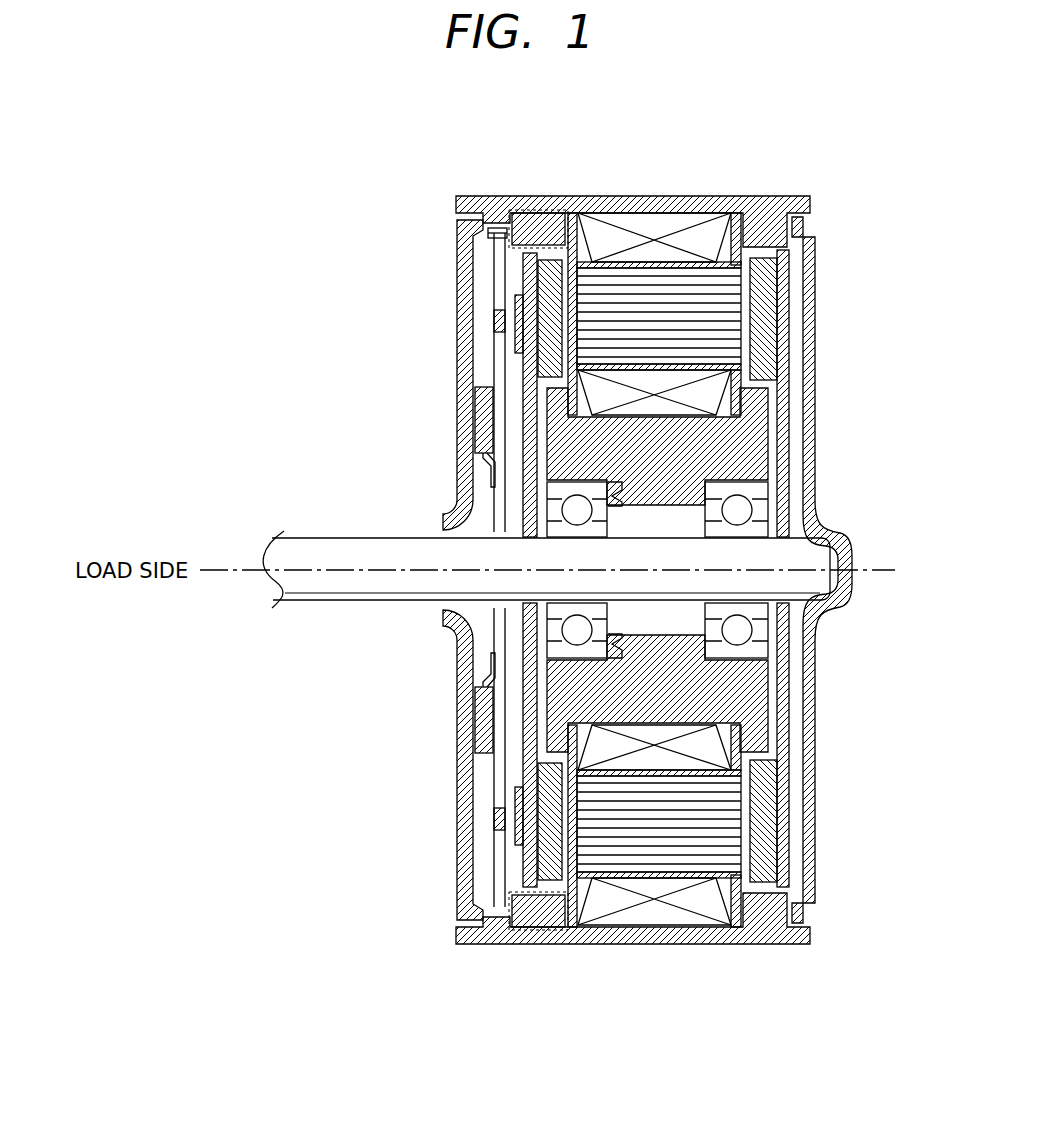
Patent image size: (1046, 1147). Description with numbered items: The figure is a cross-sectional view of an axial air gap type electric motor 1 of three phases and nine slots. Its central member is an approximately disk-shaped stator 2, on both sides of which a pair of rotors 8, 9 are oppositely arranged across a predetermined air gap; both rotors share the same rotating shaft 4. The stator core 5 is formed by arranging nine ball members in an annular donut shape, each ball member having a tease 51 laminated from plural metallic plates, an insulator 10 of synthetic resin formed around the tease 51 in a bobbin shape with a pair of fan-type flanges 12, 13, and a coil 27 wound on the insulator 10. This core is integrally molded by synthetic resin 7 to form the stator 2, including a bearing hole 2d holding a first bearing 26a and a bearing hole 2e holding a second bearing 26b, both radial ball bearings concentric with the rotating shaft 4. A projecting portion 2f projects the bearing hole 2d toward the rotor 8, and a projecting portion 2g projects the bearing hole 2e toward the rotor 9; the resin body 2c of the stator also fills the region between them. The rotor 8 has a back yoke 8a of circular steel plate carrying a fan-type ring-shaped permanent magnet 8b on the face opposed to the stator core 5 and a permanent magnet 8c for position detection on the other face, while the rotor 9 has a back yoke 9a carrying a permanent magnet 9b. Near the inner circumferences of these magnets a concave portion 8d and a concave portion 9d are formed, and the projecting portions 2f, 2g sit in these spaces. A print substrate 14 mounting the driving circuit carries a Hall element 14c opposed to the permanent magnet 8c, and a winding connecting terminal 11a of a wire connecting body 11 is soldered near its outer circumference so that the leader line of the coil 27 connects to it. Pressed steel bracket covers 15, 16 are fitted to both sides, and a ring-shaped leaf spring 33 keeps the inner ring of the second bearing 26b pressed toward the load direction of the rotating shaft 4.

The axial air gap type electric motor 1 is at (345, 202).
The stator 2 is at (740, 184).
The bearing support portion 2c is at (620, 468).
The bearing hole 2d is at (590, 680).
The bearing hole 2e is at (750, 668).
The projecting portion 2f is at (545, 735).
The projecting portion 2g is at (778, 460).
The rotating shaft 4 is at (285, 538).
The stator core 5 is at (611, 188).
The synthetic resin 7 is at (668, 196).
The rotor 8 is at (503, 655).
The back yoke 8a is at (525, 392).
The permanent magnet 8b is at (540, 858).
The permanent magnet 8c is at (515, 340).
The concave portion 8d is at (530, 765).
The rotor 9 is at (800, 390).
The back yoke 9a is at (783, 433).
The permanent magnet 9b is at (768, 305).
The concave portion 9d is at (778, 372).
The insulator 10 is at (639, 880).
The wire connecting body 11 is at (535, 213).
The winding connecting terminal 11a is at (497, 226).
The flange 12 is at (546, 945).
The flange 13 is at (752, 905).
The print substrate 14 is at (497, 262).
The Hall element 14c is at (493, 318).
The bracket cover 15 is at (465, 472).
The bracket cover 16 is at (812, 503).
The first bearing 26a is at (560, 523).
The second bearing 26b is at (763, 647).
The coil 27 is at (667, 914).
The leaf spring 33 is at (612, 626).
The tease 51 is at (740, 848).